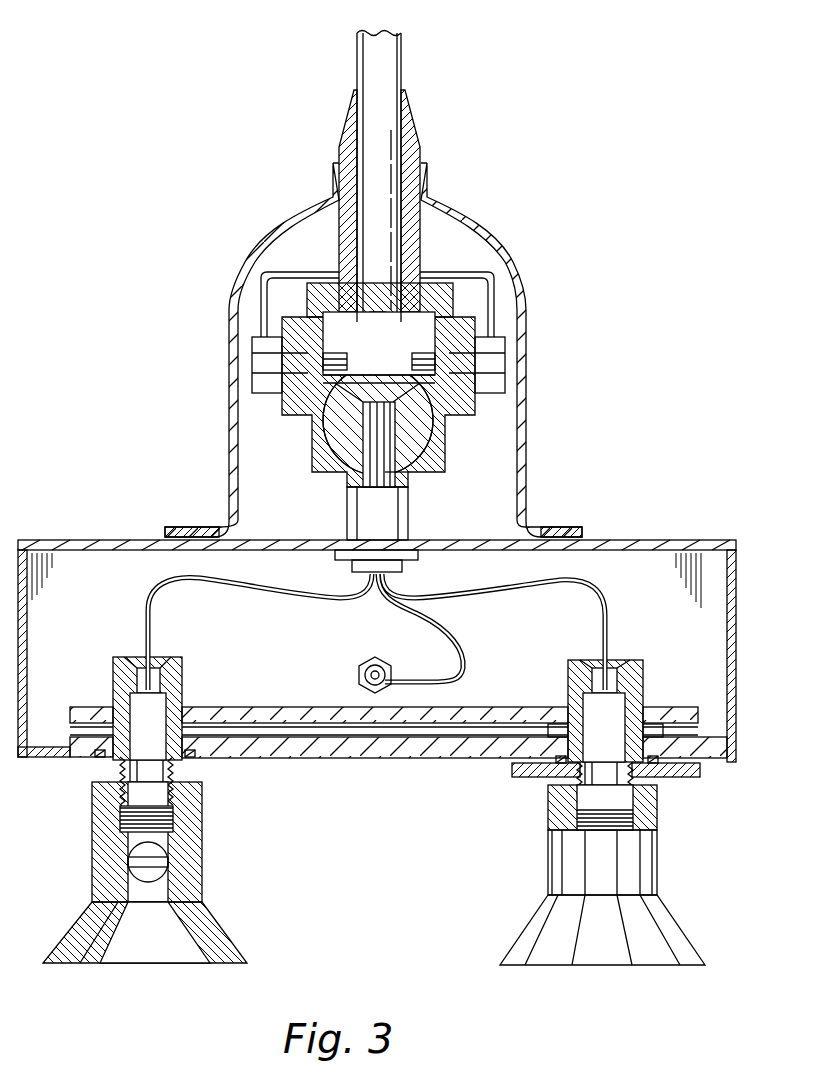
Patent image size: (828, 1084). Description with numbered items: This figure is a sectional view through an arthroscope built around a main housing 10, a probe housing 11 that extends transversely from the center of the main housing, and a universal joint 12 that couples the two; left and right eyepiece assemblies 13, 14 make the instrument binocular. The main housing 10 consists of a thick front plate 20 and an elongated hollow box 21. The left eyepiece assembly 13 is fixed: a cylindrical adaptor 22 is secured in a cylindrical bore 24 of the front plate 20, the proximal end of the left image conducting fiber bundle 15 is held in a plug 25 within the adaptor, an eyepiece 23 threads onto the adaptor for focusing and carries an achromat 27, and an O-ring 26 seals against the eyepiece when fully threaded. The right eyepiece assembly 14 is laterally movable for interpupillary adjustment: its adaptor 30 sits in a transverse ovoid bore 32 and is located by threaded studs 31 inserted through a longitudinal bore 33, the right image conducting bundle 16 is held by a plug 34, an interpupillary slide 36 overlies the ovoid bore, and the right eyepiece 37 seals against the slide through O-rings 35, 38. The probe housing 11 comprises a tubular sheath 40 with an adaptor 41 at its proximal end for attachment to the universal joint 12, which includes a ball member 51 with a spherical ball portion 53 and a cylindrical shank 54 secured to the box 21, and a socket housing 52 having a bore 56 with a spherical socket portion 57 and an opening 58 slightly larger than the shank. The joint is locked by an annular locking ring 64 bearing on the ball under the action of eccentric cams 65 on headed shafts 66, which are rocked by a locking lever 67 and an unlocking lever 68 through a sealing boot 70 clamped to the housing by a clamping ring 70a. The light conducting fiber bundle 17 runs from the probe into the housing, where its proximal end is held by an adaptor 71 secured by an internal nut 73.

The main housing 10 is at (377, 650).
The probe housing 11 is at (376, 161).
The universal joint 12 is at (381, 367).
The left eyepiece assembly 13 is at (207, 762).
The right eyepiece assembly 14 is at (551, 763).
The left image conducting fiber bundle 15 is at (172, 582).
The right image conducting fiber bundle 16 is at (585, 590).
The light conducting fiber bundle 17 is at (470, 645).
The front plate 20 is at (270, 758).
The hollow box 21 is at (680, 540).
The adaptor 22 is at (178, 680).
The eyepiece 23 is at (100, 838).
The cylindrical bore 24 is at (175, 712).
The plug 25 is at (162, 657).
The sealing O-ring 26 is at (100, 755).
The achromat 27 is at (150, 865).
The adaptor 30 is at (635, 690).
The threaded cylindrical studs 31 is at (532, 730).
The ovoid shaped bore 32 is at (568, 695).
The longitudinal bore 33 is at (432, 737).
The plug 34 is at (610, 660).
The sealing O-ring 35 is at (680, 775).
The interpupillary slide 36 is at (520, 773).
The right eyepiece 37 is at (645, 870).
The sealing O-ring 38 is at (548, 785).
The tubular sheath 40 is at (390, 40).
The adaptor 41 is at (352, 113).
The ball member 51 is at (437, 440).
The socket housing 52 is at (458, 292).
The spherical ball portion 53 is at (337, 430).
The cylindrical shank 54 is at (365, 515).
The cylindrical bore 56 is at (312, 298).
The spherical socket portion 57 is at (313, 452).
The opening 58 is at (395, 476).
The annular locking ring 64 is at (370, 378).
The eccentric cams 65 is at (333, 352).
The headed shafts 66 is at (290, 363).
The locking lever 67 is at (262, 318).
The unlocking lever 68 is at (272, 272).
The sealing boot 70 is at (275, 225).
The clamping ring 70a is at (558, 525).
The adaptor 71 is at (357, 673).
The internal nut 73 is at (397, 632).